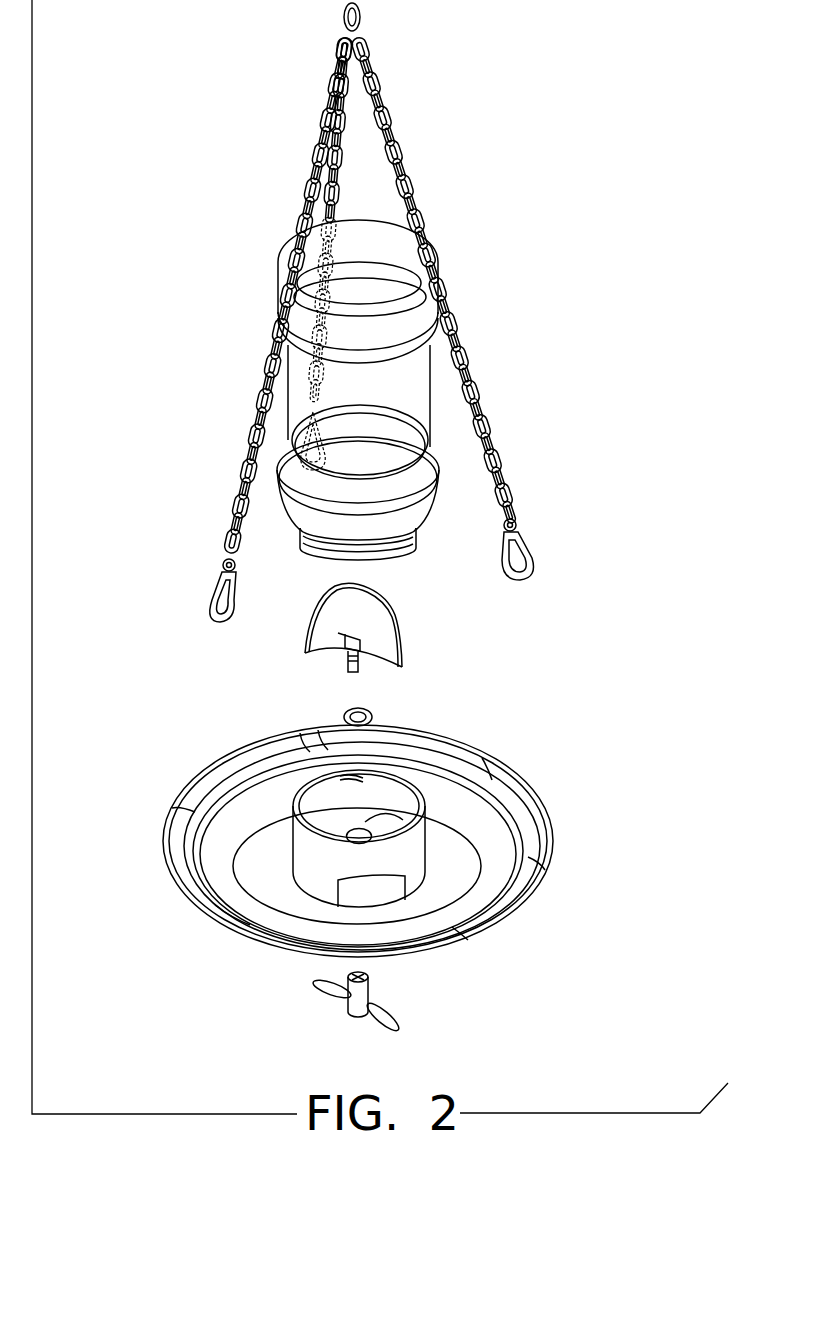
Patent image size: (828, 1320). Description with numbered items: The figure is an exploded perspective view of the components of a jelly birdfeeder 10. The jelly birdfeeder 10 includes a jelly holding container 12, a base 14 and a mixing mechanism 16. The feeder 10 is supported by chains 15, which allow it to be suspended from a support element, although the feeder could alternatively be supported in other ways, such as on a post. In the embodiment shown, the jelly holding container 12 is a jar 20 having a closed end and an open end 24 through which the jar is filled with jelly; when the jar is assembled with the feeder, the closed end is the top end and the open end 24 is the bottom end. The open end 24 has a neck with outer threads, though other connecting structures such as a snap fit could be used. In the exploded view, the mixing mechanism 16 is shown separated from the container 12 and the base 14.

The jelly birdfeeder 10 is at (562, 283).
The jelly holding container 12 is at (262, 244).
The base 14 is at (132, 829).
The chains 15 is at (395, 147).
The mixing mechanism 16 is at (446, 670).
The jar 20 is at (280, 475).
The open end 24 is at (413, 547).